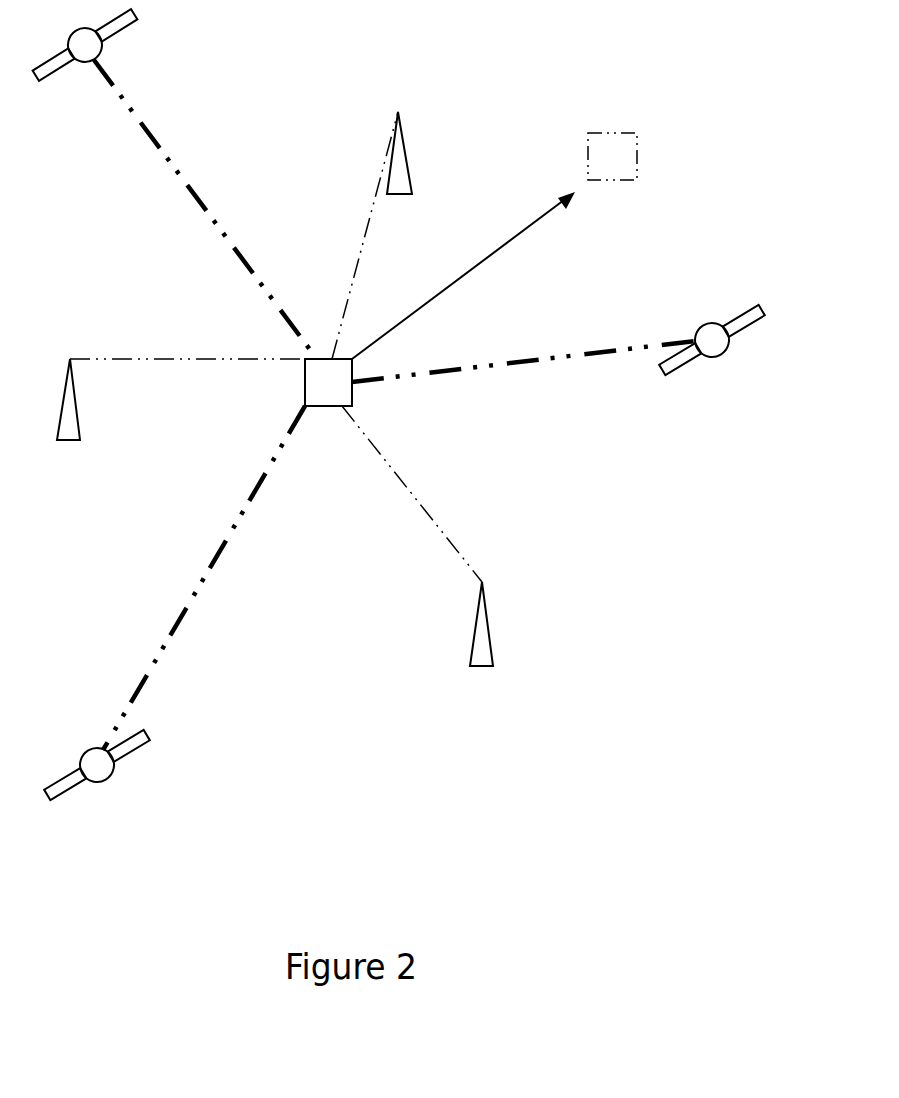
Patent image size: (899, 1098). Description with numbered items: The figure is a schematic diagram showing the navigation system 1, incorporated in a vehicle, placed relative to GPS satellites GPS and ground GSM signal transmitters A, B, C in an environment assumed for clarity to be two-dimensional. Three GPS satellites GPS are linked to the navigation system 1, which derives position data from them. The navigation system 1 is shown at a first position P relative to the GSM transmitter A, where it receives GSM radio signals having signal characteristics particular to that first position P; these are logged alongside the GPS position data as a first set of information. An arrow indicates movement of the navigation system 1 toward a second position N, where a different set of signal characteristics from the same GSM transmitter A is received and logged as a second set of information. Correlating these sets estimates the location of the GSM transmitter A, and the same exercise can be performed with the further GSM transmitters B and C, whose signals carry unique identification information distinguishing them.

The navigation system 1 is at (328, 382).
The first position P is at (344, 388).
The GSM transmitter A is at (372, 235).
The GSM transmitter B is at (417, 555).
The GSM transmitter C is at (181, 419).
The second position N is at (510, 246).
The GPS satellites GPS is at (399, 412).